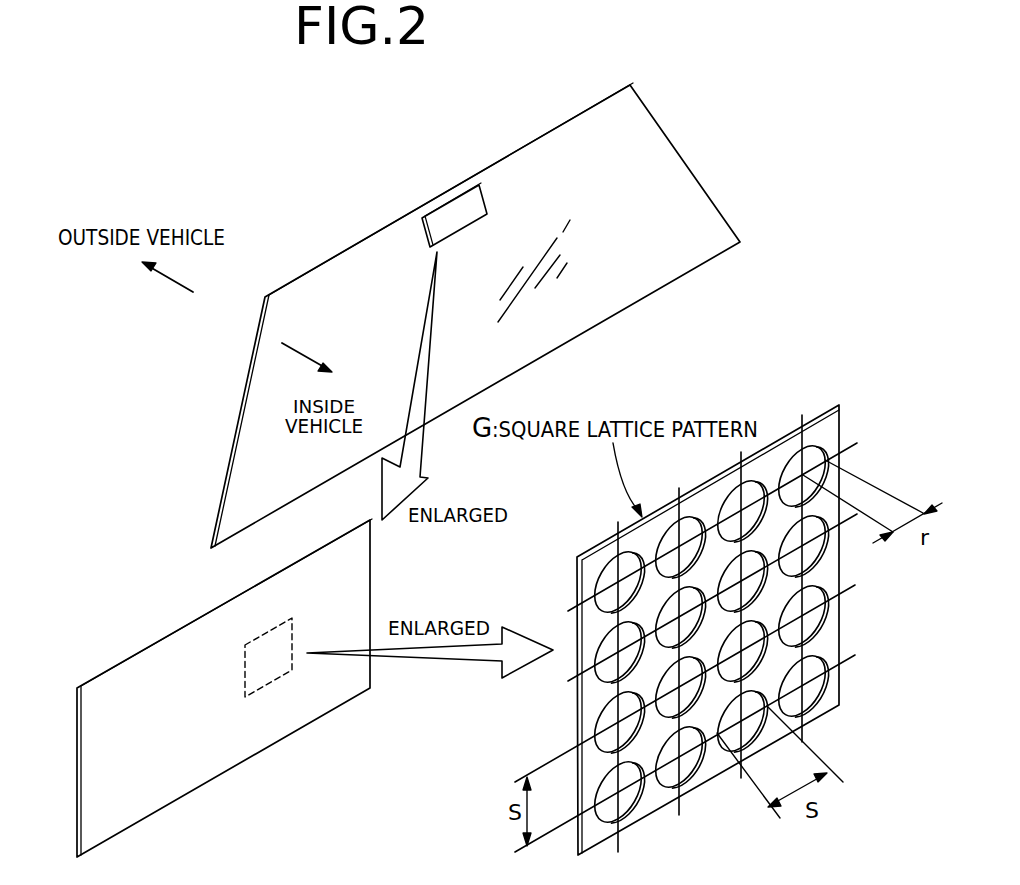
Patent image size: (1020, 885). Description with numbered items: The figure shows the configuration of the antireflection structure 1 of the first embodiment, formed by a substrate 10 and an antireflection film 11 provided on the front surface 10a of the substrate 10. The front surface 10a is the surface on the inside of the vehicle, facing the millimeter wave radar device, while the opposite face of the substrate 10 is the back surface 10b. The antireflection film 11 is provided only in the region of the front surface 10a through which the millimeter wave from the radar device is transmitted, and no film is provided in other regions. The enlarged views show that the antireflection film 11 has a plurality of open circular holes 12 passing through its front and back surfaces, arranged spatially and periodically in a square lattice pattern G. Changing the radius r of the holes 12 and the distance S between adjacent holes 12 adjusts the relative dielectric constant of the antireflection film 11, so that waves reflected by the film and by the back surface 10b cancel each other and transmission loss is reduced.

The antireflection structure 1 is at (285, 98).
The substrate 10 is at (375, 262).
The front surface 10a is at (650, 165).
The back surface 10b is at (588, 104).
The antireflection film 11 is at (453, 212).
The hole 12 is at (820, 686).